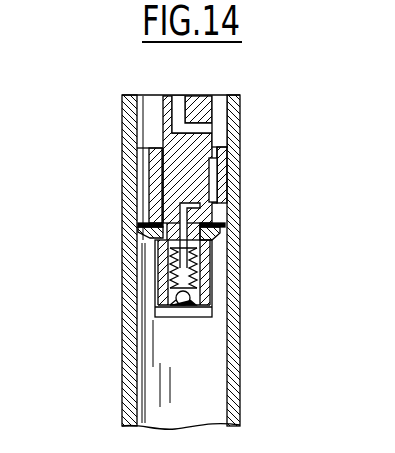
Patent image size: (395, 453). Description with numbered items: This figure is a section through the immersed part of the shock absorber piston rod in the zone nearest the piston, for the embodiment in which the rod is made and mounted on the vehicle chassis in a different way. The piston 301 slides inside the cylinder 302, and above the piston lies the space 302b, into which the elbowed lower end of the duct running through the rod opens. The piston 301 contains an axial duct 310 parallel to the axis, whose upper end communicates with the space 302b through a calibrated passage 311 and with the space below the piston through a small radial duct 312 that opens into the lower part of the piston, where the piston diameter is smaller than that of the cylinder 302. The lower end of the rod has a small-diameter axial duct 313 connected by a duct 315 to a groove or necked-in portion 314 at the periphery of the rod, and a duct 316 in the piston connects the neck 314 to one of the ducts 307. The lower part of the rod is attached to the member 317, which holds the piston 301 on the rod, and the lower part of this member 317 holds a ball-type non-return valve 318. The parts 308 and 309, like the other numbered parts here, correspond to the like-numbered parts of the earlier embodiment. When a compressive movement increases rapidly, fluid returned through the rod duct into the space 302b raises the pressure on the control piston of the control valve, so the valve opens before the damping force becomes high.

The piston 301 is at (242, 151).
The cylinder 302 is at (122, 101).
The space in the cylinder above the piston 302b is at (222, 105).
The duct 307 is at (136, 160).
The piston part 308 is at (123, 228).
The piston part 309 is at (131, 248).
The axial duct 310 is at (224, 184).
The calibrated passage 311 is at (236, 168).
The small radial duct 312 is at (221, 225).
The small-diameter axial duct 313 is at (213, 257).
The groove or necked-in portion 314 is at (221, 194).
The duct 315 is at (215, 238).
The duct in the piston 316 is at (124, 191).
The member holding the piston on the rod 317 is at (192, 321).
The ball-type non-return valve 318 is at (172, 321).